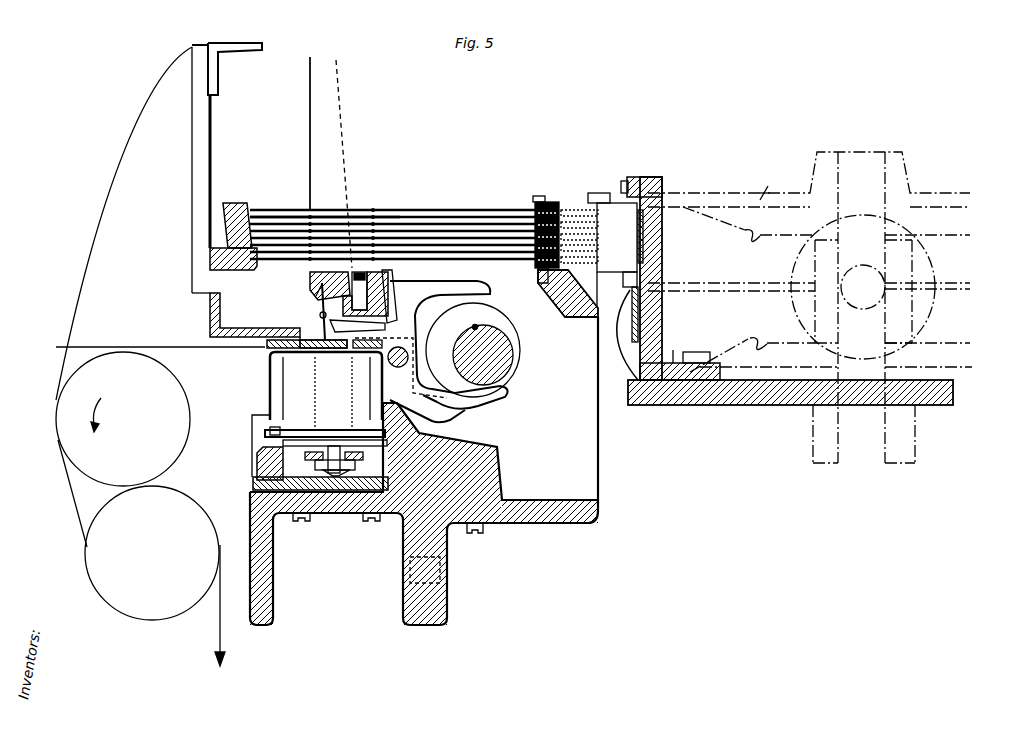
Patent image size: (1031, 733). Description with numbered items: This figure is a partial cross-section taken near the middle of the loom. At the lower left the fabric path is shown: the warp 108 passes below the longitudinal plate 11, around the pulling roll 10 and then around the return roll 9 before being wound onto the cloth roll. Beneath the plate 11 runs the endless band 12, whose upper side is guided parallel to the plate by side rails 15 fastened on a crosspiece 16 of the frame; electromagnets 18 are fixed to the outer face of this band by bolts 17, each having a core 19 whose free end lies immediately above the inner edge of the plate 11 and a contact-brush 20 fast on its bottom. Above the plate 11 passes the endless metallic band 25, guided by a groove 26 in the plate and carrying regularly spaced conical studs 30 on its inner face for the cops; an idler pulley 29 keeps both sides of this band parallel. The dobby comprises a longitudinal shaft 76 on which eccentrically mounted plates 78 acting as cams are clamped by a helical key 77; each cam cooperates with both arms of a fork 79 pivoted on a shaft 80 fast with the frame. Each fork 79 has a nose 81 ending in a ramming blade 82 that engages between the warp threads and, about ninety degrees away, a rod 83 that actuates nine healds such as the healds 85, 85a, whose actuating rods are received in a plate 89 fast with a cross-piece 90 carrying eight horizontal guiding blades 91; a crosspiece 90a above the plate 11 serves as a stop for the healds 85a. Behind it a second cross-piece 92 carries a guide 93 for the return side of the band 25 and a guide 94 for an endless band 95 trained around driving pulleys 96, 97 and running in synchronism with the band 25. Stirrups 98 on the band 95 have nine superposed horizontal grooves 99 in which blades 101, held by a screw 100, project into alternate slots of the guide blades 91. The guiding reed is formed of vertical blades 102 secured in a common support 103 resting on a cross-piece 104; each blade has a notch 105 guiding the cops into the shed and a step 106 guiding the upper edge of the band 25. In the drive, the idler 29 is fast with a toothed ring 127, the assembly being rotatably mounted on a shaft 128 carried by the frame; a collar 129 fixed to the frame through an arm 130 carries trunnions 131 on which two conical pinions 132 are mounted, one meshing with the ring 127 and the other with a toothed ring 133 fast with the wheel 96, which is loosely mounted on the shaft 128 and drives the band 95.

The return roll 9 is at (204, 541).
The pulling roll 10 is at (123, 419).
The longitudinal plate 11 is at (268, 348).
The endless band 12 is at (360, 460).
The side rails 15 is at (263, 470).
The crosspiece 16 is at (265, 610).
The bolts 17 is at (307, 521).
The electromagnet 18 is at (292, 377).
The core 19 is at (318, 400).
The contact-brush 20 is at (270, 434).
The endless metallic band 25 is at (320, 315).
The groove 26 is at (299, 341).
The idler pulley 29 is at (681, 366).
The conical studs 30 is at (352, 332).
The longitudinal shaft 76 is at (498, 366).
The helical key 77 is at (476, 327).
The eccentrically mounted plates 78 is at (514, 327).
The fork 79 is at (490, 403).
The shaft 80 is at (398, 368).
The nose 81 is at (368, 349).
The ramming blade 82 is at (345, 349).
The rod 83 is at (394, 308).
The heald 85 is at (265, 210).
The heald 85a is at (282, 218).
The plate 89 is at (540, 273).
The cross-piece 90 is at (580, 312).
The crosspiece 90a is at (232, 204).
The horizontal guiding blades 91 is at (548, 202).
The second cross-piece 92 is at (652, 249).
The guide 93 is at (637, 353).
The guide 94 is at (662, 217).
The endless band 95 is at (662, 205).
The driving pulley 96 is at (777, 185).
The driving pulley 97 is at (787, 181).
The stirrups 98 is at (660, 192).
The horizontal grooves 99 is at (626, 184).
The screw 100 is at (600, 194).
The blades 101 is at (571, 212).
The vertical blades 102 is at (310, 279).
The common support 103 is at (360, 276).
The cross-piece 104 is at (382, 274).
The notch 105 is at (325, 280).
The step 106 is at (320, 300).
The warp 108 is at (310, 104).
The toothed ring 127 is at (830, 344).
The shaft 128 is at (846, 372).
The collar 129 is at (900, 250).
The arm 130 is at (955, 286).
The trunnions 131 is at (875, 303).
The conical pinions 132 is at (924, 256).
The toothed ring 133 is at (826, 235).